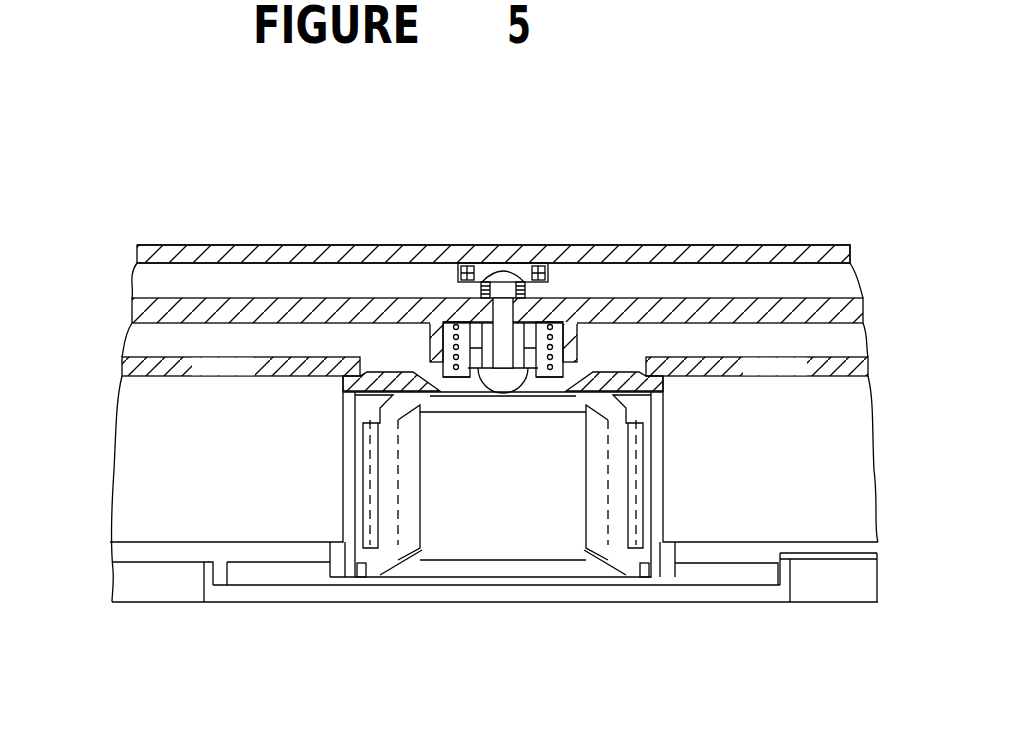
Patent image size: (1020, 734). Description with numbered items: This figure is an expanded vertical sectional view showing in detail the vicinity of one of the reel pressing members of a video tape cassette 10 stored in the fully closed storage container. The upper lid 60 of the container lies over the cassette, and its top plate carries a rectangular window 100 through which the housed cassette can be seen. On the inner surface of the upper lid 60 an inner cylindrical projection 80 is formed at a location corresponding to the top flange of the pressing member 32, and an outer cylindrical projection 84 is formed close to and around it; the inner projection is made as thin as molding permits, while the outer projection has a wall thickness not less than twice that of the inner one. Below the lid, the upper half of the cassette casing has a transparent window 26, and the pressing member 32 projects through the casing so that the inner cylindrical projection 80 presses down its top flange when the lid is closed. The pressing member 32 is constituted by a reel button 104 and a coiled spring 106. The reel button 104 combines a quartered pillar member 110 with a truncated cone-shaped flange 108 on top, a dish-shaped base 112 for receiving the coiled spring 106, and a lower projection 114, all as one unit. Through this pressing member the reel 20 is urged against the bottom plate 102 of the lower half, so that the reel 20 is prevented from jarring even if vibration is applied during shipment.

The video tape cassette 10 is at (112, 437).
The supply reel 20 is at (660, 502).
The transparent window 26 is at (145, 313).
The pressing member 32 is at (495, 250).
The upper lid 60 is at (787, 245).
The inner cylindrical projection 80 is at (512, 268).
The outer cylindrical projection 84 is at (458, 262).
The rectangular window 100 is at (203, 248).
The bottom plate 102 is at (485, 592).
The reel button 104 is at (468, 326).
The coiled spring 106 is at (452, 345).
The truncated cone-shaped flange 108 is at (530, 323).
The quartered pillar member 110 is at (547, 325).
The dish-shaped base 112 is at (538, 372).
The lower projection 114 is at (498, 378).